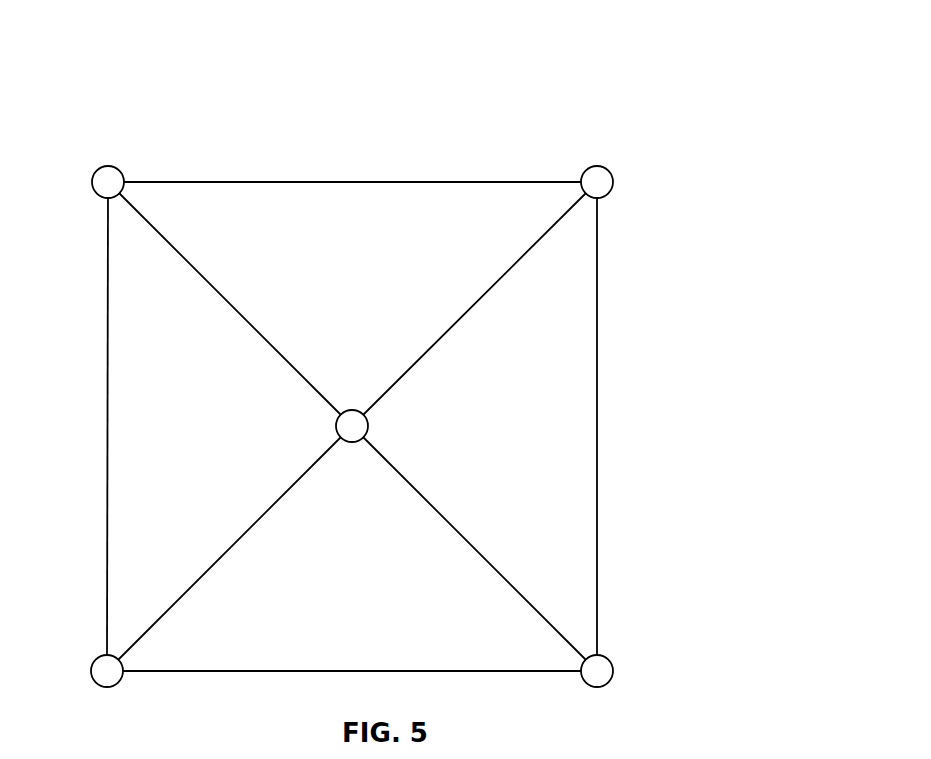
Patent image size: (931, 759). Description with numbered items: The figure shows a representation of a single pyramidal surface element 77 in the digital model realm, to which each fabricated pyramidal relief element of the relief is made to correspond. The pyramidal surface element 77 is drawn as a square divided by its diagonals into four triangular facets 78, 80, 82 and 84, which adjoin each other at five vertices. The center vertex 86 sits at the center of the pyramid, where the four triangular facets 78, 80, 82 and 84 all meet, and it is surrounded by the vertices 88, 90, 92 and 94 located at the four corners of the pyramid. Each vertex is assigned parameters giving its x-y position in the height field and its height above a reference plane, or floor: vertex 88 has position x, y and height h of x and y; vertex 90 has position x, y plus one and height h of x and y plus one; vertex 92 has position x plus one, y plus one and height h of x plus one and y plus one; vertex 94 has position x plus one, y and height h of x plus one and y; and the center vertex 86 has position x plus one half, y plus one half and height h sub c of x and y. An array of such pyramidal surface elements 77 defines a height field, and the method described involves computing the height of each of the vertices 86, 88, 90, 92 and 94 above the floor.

The pyramidal surface element 77 is at (463, 130).
The triangular facet 78 is at (380, 273).
The triangular facet 80 is at (527, 372).
The triangular facet 82 is at (381, 575).
The triangular facet 84 is at (200, 378).
The center vertex 86 is at (352, 410).
The vertex 88 is at (92, 671).
The vertex 90 is at (92, 182).
The vertex 92 is at (613, 182).
The vertex 94 is at (613, 671).